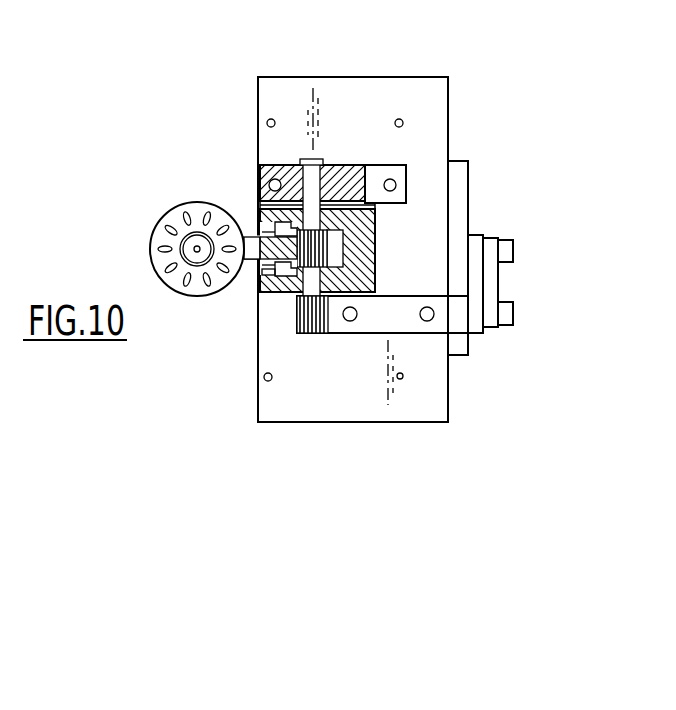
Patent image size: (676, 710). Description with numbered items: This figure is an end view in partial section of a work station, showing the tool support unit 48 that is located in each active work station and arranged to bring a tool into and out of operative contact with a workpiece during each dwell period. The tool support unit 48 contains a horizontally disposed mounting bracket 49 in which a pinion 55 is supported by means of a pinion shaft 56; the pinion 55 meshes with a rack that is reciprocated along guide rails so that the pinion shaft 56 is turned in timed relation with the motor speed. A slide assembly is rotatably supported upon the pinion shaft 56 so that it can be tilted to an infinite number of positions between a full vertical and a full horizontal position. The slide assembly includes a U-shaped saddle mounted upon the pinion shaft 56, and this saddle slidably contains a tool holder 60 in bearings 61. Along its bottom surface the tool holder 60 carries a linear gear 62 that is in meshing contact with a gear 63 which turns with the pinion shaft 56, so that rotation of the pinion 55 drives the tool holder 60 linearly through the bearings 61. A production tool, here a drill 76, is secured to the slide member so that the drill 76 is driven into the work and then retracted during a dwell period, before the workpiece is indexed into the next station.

The tool support unit 48 is at (374, 51).
The mounting bracket 49 is at (382, 166).
The pinion 55 is at (300, 334).
The pinion shaft 56 is at (326, 163).
The tool holder 60 is at (265, 236).
The bearings 61 is at (275, 225).
The linear gear 62 is at (275, 272).
The gear 63 is at (343, 250).
The drill 76 is at (183, 208).